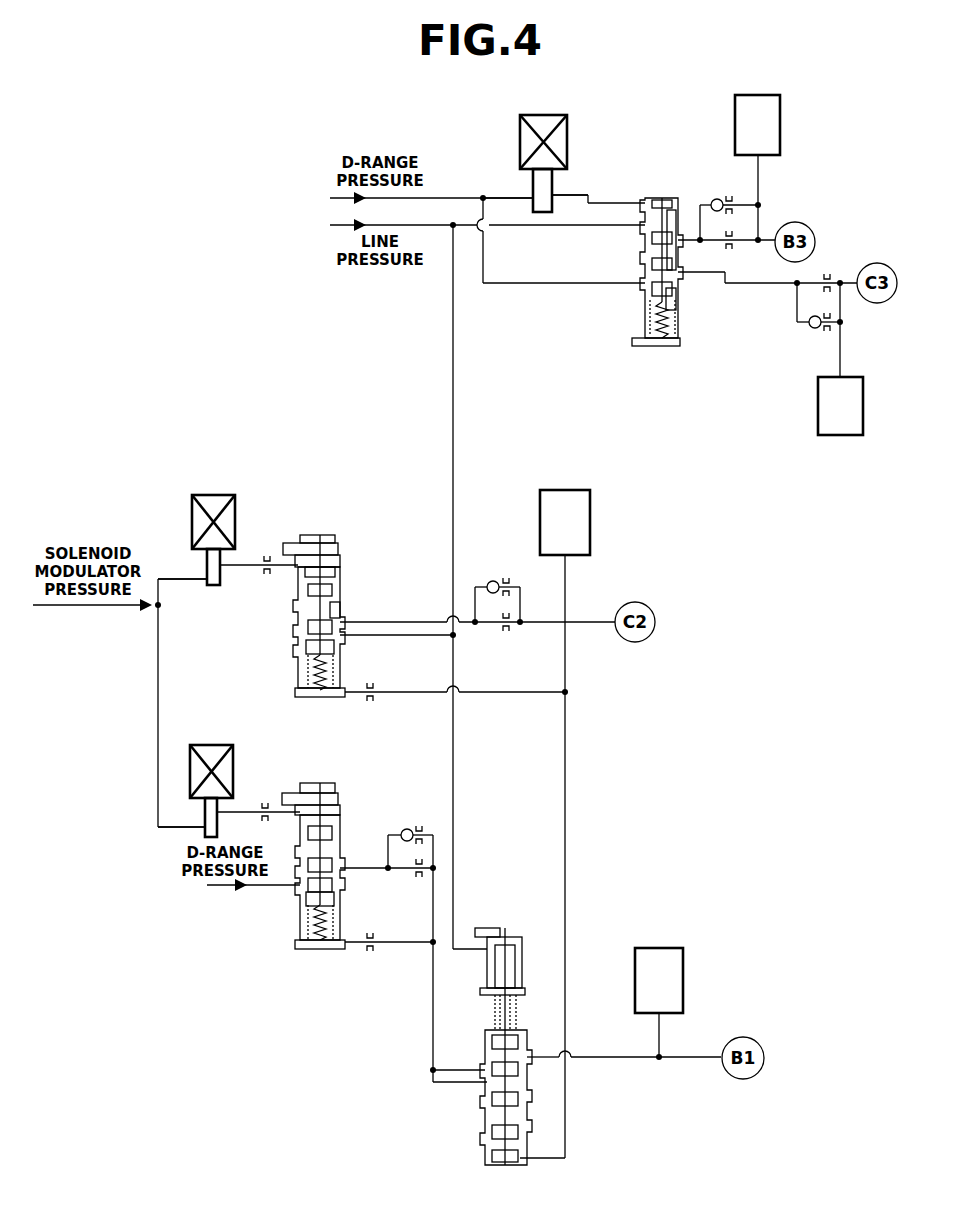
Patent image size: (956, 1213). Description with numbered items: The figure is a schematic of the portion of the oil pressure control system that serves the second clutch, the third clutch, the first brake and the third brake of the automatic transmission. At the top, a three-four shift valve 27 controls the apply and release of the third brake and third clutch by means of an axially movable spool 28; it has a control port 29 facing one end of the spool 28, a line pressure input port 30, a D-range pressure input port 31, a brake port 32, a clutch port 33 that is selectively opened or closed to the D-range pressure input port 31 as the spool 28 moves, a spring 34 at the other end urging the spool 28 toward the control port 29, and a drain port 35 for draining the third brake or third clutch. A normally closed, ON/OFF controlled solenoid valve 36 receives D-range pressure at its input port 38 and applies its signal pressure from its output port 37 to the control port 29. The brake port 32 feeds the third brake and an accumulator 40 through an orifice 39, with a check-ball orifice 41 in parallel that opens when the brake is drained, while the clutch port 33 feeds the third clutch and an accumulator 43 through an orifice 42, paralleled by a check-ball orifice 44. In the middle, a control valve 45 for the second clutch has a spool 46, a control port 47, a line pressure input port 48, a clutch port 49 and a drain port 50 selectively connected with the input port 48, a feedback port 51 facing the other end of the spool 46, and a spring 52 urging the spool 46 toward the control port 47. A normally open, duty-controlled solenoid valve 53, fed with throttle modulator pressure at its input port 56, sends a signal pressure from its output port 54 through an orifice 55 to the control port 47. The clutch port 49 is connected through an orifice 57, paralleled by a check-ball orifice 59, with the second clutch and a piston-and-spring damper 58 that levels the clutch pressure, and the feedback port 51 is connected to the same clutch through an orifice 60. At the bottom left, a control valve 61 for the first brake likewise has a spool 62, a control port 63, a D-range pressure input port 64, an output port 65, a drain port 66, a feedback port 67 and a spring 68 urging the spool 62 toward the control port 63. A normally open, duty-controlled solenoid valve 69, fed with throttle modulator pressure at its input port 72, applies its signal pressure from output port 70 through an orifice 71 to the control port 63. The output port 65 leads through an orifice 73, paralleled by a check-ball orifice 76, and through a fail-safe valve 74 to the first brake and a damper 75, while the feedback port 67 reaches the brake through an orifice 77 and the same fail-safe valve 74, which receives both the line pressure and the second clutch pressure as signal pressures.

The 3-4 shift valve 27 is at (656, 292).
The spool 28 is at (656, 251).
The control port 29 is at (648, 202).
The line pressure input port 30 is at (652, 240).
The D-range pressure input port 31 is at (648, 290).
The brake port 32 is at (672, 232).
The clutch port 33 is at (678, 283).
The spring 34 is at (676, 342).
The drain port 35 is at (650, 260).
The solenoid valve 36 is at (543, 121).
The output port 37 is at (558, 196).
The input port 38 is at (522, 195).
The orifice 39 is at (733, 248).
The accumulator 40 is at (760, 106).
The orifice having a check ball 41 is at (713, 200).
The orifice 42 is at (830, 273).
The accumulator 43 is at (840, 432).
The orifice having a check ball 44 is at (811, 328).
The control valve 45 is at (319, 611).
The spool 46 is at (300, 655).
The control port 47 is at (300, 572).
The line pressure input port 48 is at (340, 632).
The clutch port 49 is at (345, 612).
The drain port 50 is at (340, 600).
The feedback port 51 is at (322, 698).
The spring 52 is at (306, 675).
The solenoid valve 53 is at (214, 490).
The output port 54 is at (292, 550).
The orifice 55 is at (274, 556).
The input port 56 is at (205, 584).
The orifice 57 is at (510, 630).
The damper 58 is at (588, 528).
The orifice having a check ball 59 is at (498, 580).
The orifice 60 is at (378, 700).
The control valve 61 is at (293, 898).
The spool 62 is at (302, 905).
The control port 63 is at (302, 818).
The D-range pressure input port 64 is at (302, 880).
The output port 65 is at (338, 876).
The drain port 66 is at (336, 850).
The feedback port 67 is at (338, 950).
The spring 68 is at (322, 950).
The solenoid valve 69 is at (207, 740).
The output port 70 is at (228, 806).
The orifice 71 is at (260, 818).
The input port 72 is at (200, 826).
The orifice 73 is at (422, 878).
The fail-safe valve 74 is at (468, 1104).
The damper 75 is at (658, 950).
The orifice having a check ball 76 is at (408, 829).
The orifice 77 is at (378, 945).